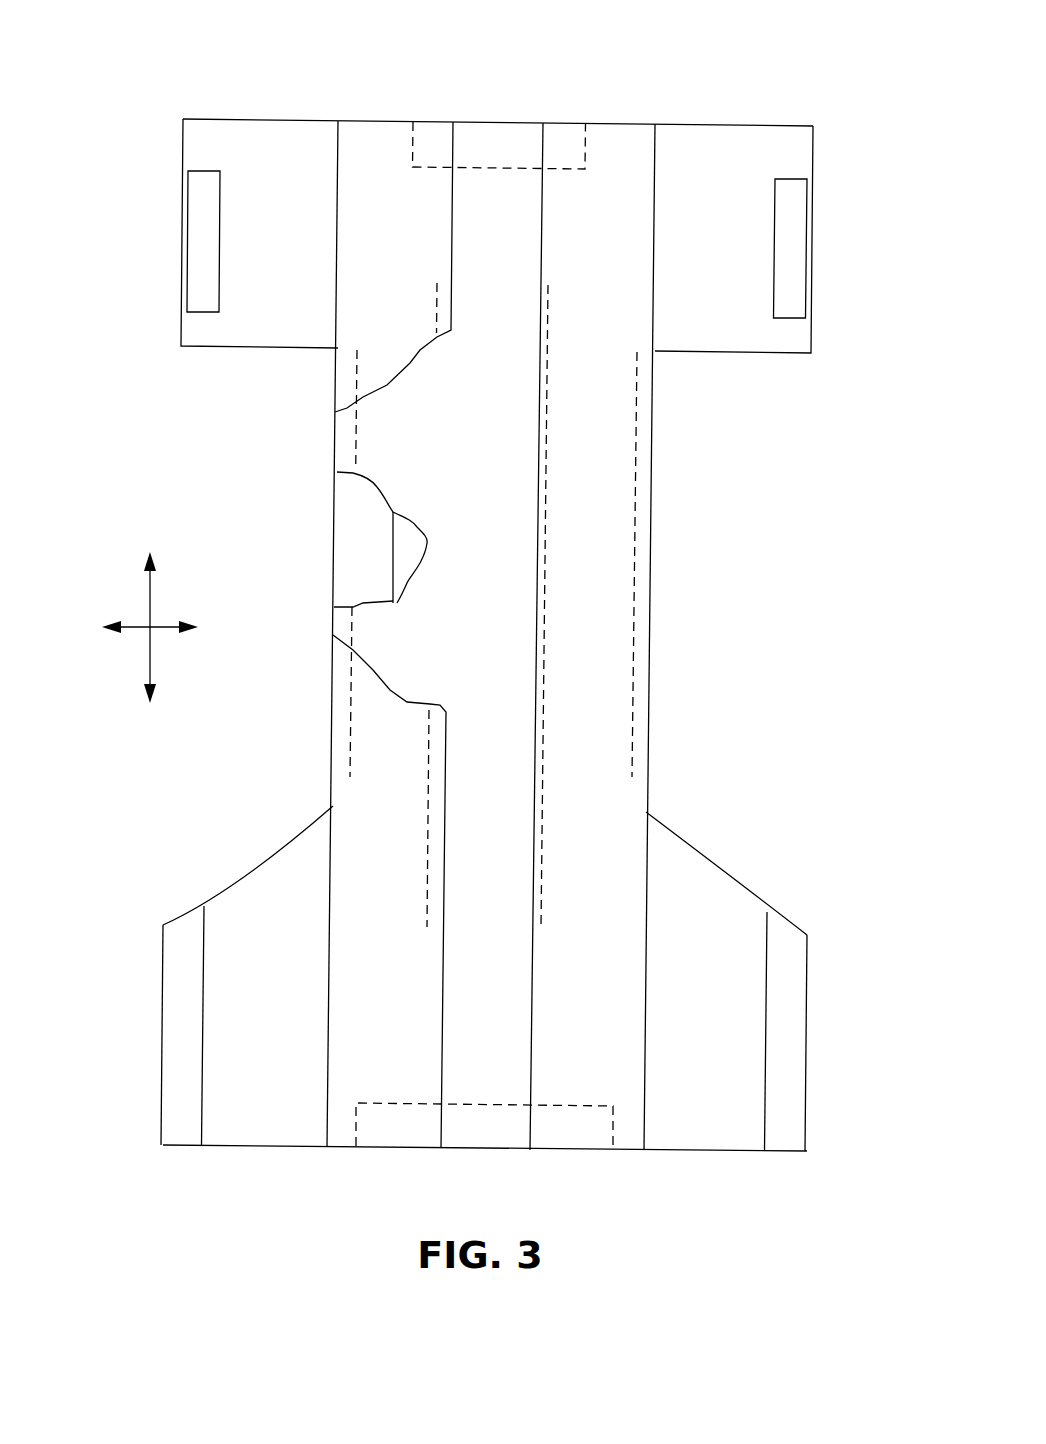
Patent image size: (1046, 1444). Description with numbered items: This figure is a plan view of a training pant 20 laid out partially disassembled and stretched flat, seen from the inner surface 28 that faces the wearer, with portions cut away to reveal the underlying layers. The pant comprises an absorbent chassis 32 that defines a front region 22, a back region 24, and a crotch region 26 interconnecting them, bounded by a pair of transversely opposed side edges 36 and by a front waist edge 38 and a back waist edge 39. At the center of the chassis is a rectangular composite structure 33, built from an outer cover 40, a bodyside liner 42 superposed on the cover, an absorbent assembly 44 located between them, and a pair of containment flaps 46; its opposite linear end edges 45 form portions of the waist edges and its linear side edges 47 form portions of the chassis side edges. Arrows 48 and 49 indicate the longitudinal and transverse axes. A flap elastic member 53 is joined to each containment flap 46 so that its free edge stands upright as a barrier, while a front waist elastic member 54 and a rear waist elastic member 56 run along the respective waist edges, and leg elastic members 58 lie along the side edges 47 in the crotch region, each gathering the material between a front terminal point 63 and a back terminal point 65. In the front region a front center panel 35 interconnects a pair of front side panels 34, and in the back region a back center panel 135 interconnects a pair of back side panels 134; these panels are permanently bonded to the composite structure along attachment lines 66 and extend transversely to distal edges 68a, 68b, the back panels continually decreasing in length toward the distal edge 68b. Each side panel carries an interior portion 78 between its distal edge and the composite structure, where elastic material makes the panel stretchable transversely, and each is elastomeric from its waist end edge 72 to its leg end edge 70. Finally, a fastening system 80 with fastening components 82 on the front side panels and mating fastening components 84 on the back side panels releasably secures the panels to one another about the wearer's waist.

The training pant 20 is at (251, 103).
The front region 22 is at (165, 158).
The back region 24 is at (798, 891).
The crotch region 26 is at (680, 692).
The inner surface 28 is at (693, 1151).
The absorbent chassis 32 is at (670, 650).
The rectangular composite structure 33 is at (655, 235).
The front side panels 34 is at (780, 142).
The front center panel 35 is at (428, 177).
The side edges 36 is at (333, 727).
The front waist edge 38 is at (396, 122).
The back waist edge 39 is at (343, 1147).
The outer cover 40 is at (383, 597).
The bodyside liner 42 is at (447, 457).
The absorbent assembly 44 is at (402, 575).
The linear end edges 45 is at (632, 125).
The containment flaps 46 is at (440, 215).
The linear side edges 47 is at (338, 204).
The longitudinal axis arrow 48 is at (148, 597).
The transverse axis arrow 49 is at (131, 628).
The flap elastic member 53 is at (440, 293).
The front waist elastic member 54 is at (502, 132).
The rear waist elastic member 56 is at (588, 1135).
The leg elastic members 58 is at (355, 455).
The front terminal point 63 is at (357, 327).
The back terminal point 65 is at (355, 795).
The attachment lines 66 is at (338, 292).
The distal edge 68a is at (181, 308).
The distal edge 68b is at (163, 1095).
The leg end edge 70 is at (297, 348).
The waist end edge 72 is at (303, 121).
The interior portion 78 is at (765, 254).
The fastening system 80 is at (820, 237).
The fastening components 82 is at (188, 230).
The mating fastening components 84 is at (187, 1000).
The back side panels 134 is at (233, 1013).
The back center panel 135 is at (398, 1082).